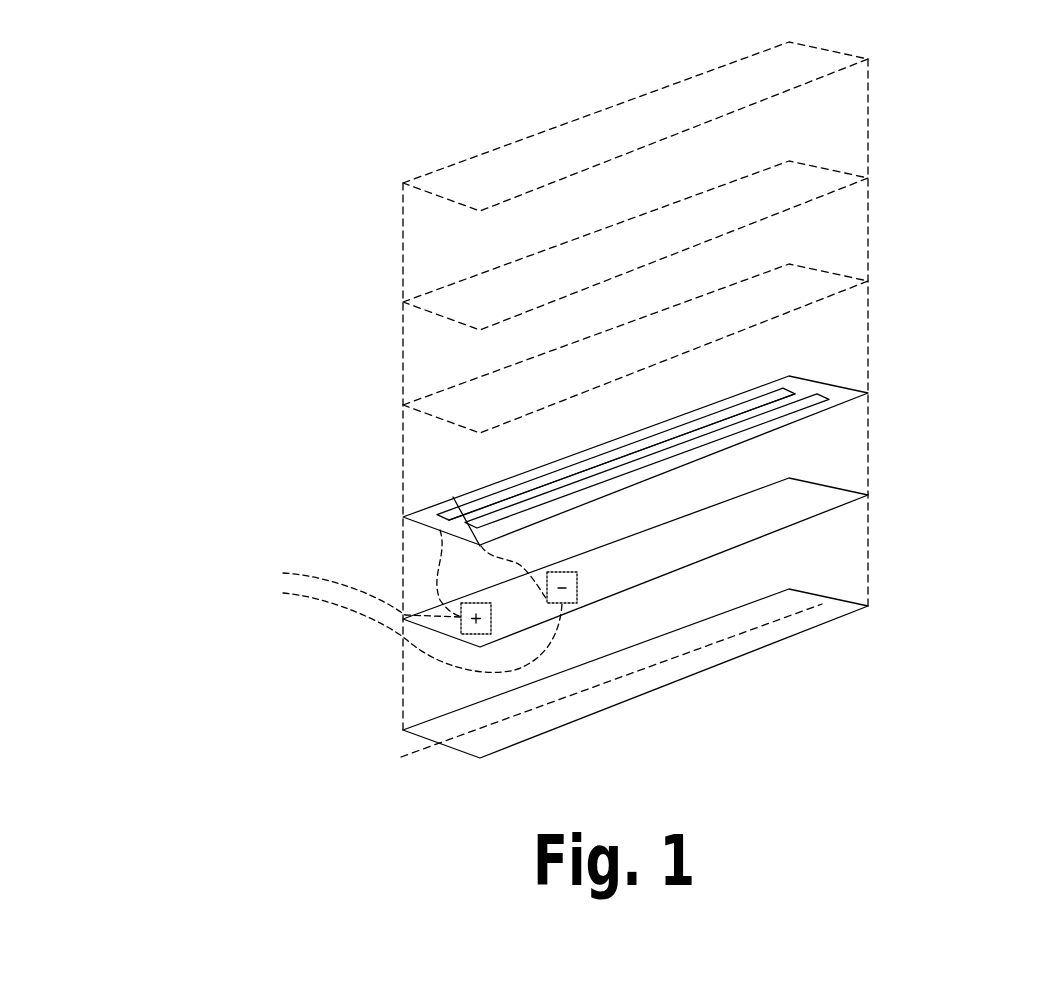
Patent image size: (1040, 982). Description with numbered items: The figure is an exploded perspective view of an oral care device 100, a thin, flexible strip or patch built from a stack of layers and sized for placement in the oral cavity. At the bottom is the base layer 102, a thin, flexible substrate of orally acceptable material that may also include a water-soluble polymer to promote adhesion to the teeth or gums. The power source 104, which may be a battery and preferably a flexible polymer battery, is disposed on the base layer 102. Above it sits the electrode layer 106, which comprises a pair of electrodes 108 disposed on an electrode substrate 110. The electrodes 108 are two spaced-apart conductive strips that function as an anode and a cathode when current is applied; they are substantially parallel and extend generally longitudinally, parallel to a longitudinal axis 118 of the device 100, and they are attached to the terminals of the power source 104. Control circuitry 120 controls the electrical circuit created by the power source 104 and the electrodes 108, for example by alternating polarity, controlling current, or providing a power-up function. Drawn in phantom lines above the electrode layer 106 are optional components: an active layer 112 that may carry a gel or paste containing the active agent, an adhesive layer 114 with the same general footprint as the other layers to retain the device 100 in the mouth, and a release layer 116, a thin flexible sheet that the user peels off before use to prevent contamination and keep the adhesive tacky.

The oral care device 100 is at (237, 127).
The base layer 102 is at (838, 600).
The power source 104 is at (838, 489).
The electrode layer 106 is at (838, 387).
The electrodes 108 is at (453, 497).
The electrode substrate 110 is at (442, 520).
The active layer 112 is at (838, 275).
The adhesive layer 114 is at (838, 172).
The release layer 116 is at (838, 53).
The longitudinal axis 118 is at (438, 747).
The control circuitry 120 is at (256, 593).